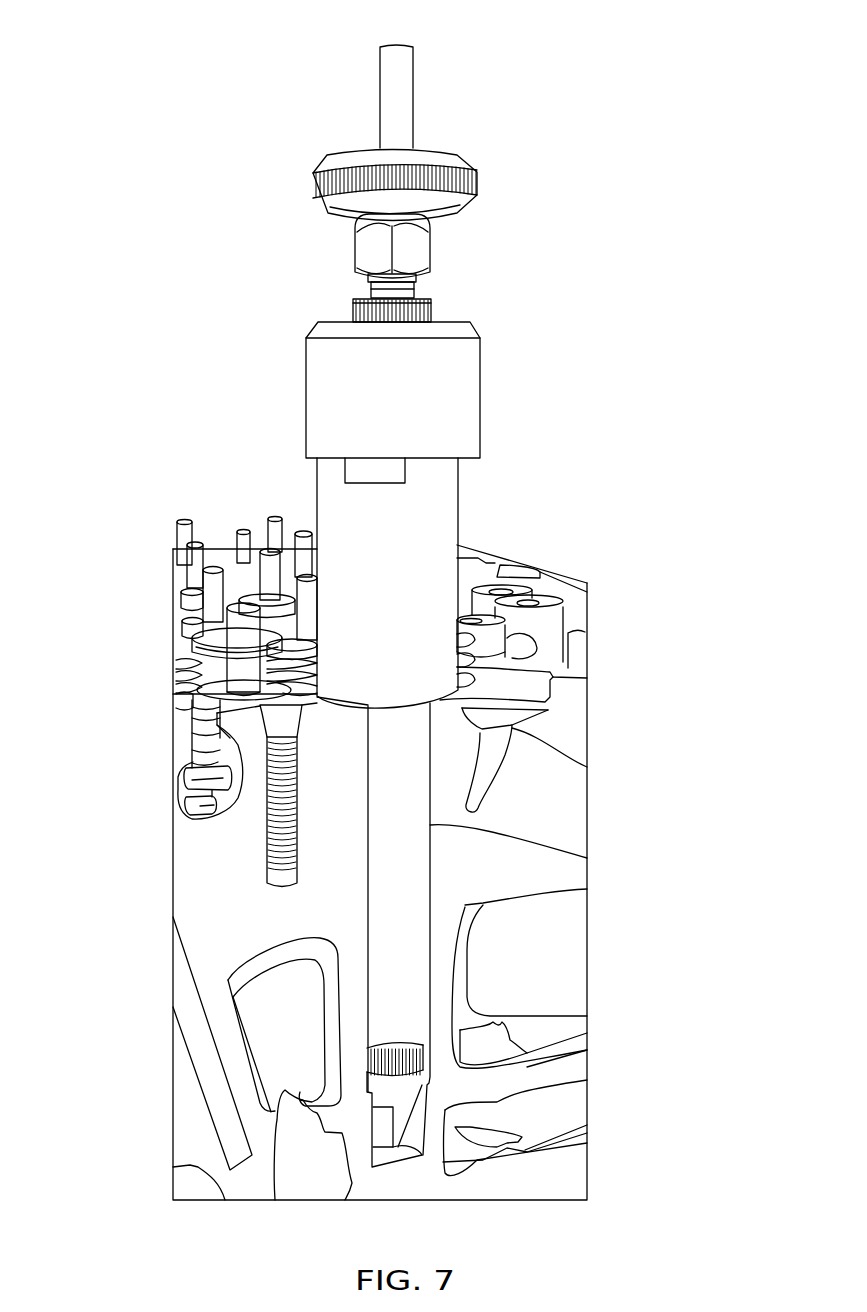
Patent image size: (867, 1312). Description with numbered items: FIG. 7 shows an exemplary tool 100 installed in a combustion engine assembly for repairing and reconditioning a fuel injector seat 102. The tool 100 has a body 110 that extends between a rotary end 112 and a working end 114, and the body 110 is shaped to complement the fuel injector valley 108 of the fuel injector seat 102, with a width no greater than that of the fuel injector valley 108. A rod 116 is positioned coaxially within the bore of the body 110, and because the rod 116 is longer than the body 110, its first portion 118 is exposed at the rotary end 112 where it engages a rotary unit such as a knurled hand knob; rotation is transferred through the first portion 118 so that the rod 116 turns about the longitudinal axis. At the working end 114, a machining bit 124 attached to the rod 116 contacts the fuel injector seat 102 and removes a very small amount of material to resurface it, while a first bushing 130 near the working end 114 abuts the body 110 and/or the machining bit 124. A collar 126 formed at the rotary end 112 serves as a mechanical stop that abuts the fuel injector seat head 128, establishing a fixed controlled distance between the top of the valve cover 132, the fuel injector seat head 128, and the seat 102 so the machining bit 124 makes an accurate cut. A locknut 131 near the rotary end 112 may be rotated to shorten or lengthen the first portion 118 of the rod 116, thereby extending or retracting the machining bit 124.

The tool 100 is at (514, 74).
The fuel injector seat 102 is at (387, 1172).
The fuel injector valley 108 is at (440, 826).
The body 110 is at (420, 960).
The rotary end 112 is at (408, 718).
The working end 114 is at (380, 1027).
The rod 116 is at (413, 105).
The first portion 118 is at (394, 45).
The machining bit 124 is at (398, 1148).
The collar 126 is at (450, 522).
The fuel injector seat head 128 is at (330, 718).
The first bushing 130 is at (375, 1062).
The locknut 131 is at (336, 240).
The valve cover 132 is at (515, 730).